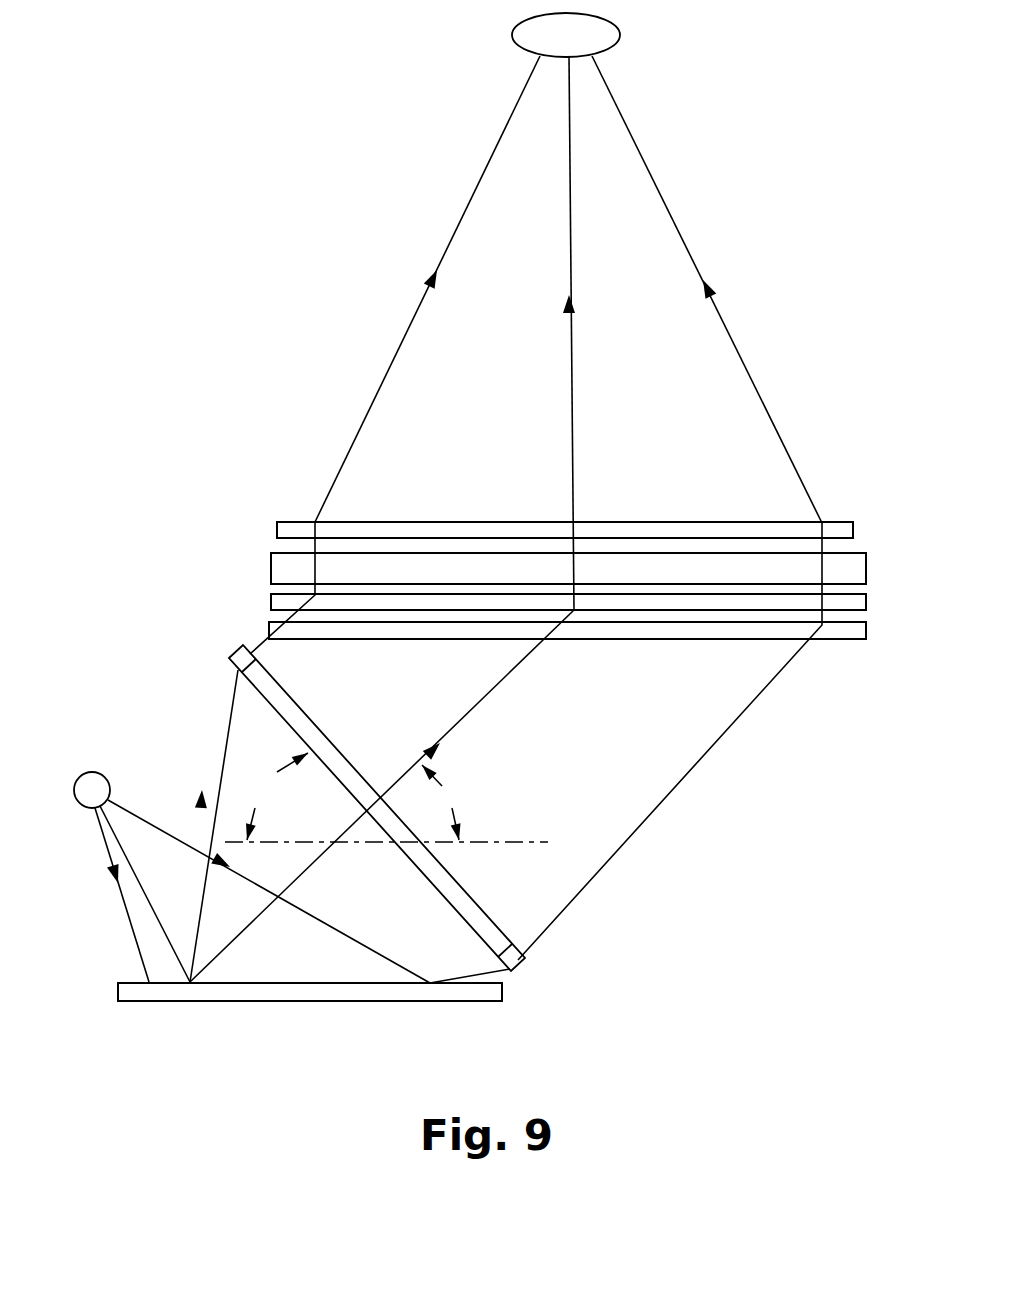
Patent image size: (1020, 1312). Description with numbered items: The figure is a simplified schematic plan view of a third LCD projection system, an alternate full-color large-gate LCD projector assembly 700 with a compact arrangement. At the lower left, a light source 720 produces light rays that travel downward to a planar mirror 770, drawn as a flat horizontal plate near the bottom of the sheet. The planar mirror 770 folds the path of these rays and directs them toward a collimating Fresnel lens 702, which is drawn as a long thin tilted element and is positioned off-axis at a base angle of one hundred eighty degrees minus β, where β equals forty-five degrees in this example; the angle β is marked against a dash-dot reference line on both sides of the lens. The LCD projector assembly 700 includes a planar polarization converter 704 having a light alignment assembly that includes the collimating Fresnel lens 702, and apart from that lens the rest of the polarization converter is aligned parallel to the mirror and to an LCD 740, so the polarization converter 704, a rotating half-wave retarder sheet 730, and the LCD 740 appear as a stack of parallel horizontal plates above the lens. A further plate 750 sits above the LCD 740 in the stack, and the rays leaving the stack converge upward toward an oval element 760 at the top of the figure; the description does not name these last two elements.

The LCD projector assembly 700 is at (211, 263).
The viewer / eye 760 is at (515, 27).
The optical plate 750 is at (277, 529).
The LCD 740 is at (271, 568).
The rotating half-wave retarder sheet 730 is at (271, 598).
The planar polarization converter 704 is at (866, 632).
The light source 720 is at (88, 783).
The collimating Fresnel lens 702 is at (527, 962).
The planar mirror 770 is at (470, 1000).